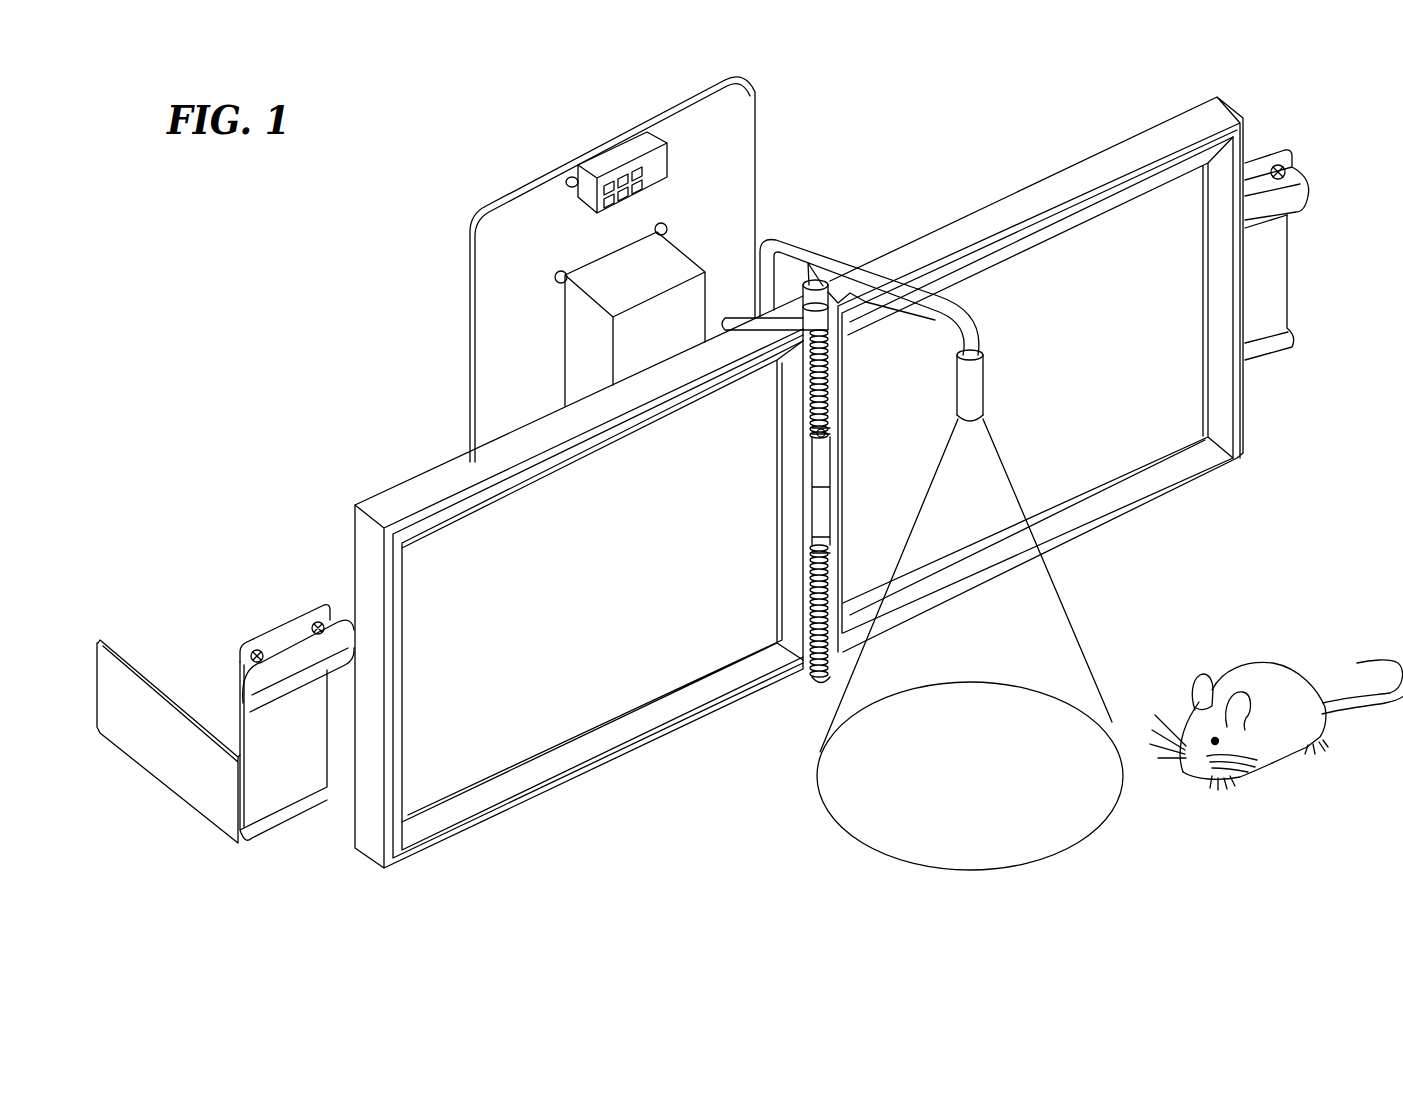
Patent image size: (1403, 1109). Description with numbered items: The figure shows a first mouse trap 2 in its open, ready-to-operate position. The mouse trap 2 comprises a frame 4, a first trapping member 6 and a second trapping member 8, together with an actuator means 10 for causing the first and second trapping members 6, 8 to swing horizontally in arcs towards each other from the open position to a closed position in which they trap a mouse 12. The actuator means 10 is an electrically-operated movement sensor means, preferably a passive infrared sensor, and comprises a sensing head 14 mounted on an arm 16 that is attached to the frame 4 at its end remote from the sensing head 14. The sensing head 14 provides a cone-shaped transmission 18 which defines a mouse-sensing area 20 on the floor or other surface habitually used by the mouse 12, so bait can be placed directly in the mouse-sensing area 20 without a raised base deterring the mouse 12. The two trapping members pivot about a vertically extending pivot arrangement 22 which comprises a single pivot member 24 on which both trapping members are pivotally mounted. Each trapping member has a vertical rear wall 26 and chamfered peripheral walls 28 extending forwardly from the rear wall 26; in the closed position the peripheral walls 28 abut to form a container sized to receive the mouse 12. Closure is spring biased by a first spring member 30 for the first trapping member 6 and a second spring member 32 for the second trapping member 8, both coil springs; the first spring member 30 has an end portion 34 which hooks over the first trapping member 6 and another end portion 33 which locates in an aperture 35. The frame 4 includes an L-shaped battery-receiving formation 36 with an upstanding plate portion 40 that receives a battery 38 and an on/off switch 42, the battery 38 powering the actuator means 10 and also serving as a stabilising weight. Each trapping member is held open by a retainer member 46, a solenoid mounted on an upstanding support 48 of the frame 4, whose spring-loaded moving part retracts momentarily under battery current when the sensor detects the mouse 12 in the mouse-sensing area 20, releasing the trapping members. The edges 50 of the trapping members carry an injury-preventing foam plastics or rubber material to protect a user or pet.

The mouse trap 2 is at (258, 262).
The frame 4 is at (137, 762).
The first trapping member 6 is at (385, 483).
The second trapping member 8 is at (1000, 195).
The actuator means 10 is at (992, 372).
The mouse 12 is at (1280, 686).
The sensing head 14 is at (980, 402).
The arm 16 is at (792, 245).
The cone-shaped transmission 18 is at (1065, 612).
The mouse-sensing area 20 is at (939, 791).
The pivot arrangement 22 is at (838, 463).
The single pivot member 24 is at (818, 283).
The rear wall 26 is at (567, 569).
The peripheral walls 28 is at (793, 410).
The first spring member 30 is at (832, 383).
The second spring member 32 is at (815, 690).
The end portion 33 is at (808, 442).
The end portion 34 is at (730, 316).
The aperture 35 is at (836, 432).
The battery-receiving formation 36 is at (468, 268).
The battery 38 is at (642, 341).
The upstanding plate portion 40 is at (498, 331).
The on/off switch 42 is at (610, 172).
The retainer member 46 is at (1290, 193).
The upstanding supports 48 is at (1252, 314).
The edges 50 is at (873, 316).